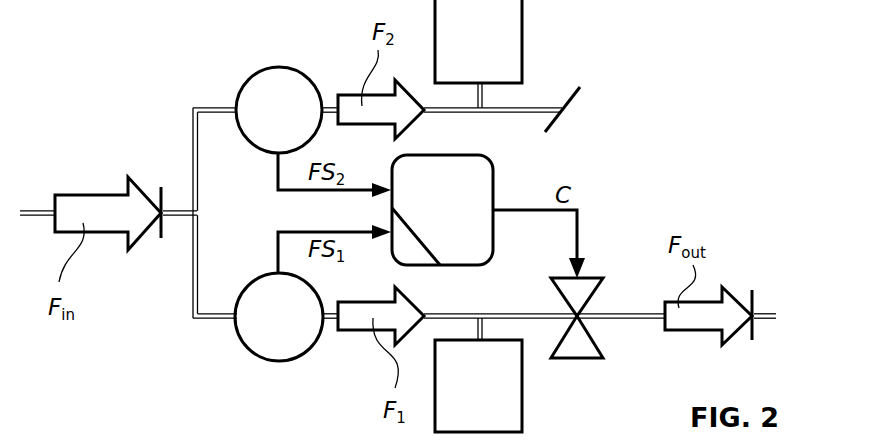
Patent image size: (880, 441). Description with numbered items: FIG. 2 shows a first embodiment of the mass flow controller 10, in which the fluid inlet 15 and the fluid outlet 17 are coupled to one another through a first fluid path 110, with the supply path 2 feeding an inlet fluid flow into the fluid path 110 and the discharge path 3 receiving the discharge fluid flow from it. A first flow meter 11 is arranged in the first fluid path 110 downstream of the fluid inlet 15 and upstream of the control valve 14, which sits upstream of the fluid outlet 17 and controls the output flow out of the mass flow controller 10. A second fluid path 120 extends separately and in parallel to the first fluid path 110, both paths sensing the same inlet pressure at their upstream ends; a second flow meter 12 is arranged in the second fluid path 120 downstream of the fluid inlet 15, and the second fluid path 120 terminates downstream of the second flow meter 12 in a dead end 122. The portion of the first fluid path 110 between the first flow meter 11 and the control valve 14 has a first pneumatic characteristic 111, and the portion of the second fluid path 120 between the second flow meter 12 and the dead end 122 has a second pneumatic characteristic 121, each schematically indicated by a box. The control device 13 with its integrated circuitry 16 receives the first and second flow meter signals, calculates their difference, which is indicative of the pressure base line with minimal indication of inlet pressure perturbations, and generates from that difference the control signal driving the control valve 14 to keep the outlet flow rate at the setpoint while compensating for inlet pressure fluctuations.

The mass flow controller 10 is at (140, 96).
The supply path 2 is at (38, 210).
The discharge path 3 is at (755, 328).
The first flow meter 11 is at (294, 329).
The second flow meter 12 is at (294, 122).
The control device 13 is at (455, 212).
The control valve 14 is at (587, 286).
The fluid inlet 15 is at (162, 238).
The integrated circuitry 16 is at (402, 253).
The fluid outlet 17 is at (753, 300).
The first fluid path 110 is at (535, 321).
The first pneumatic characteristic 111 is at (500, 398).
The second fluid path 120 is at (530, 104).
The second pneumatic characteristic 121 is at (500, 45).
The dead end 122 is at (573, 100).